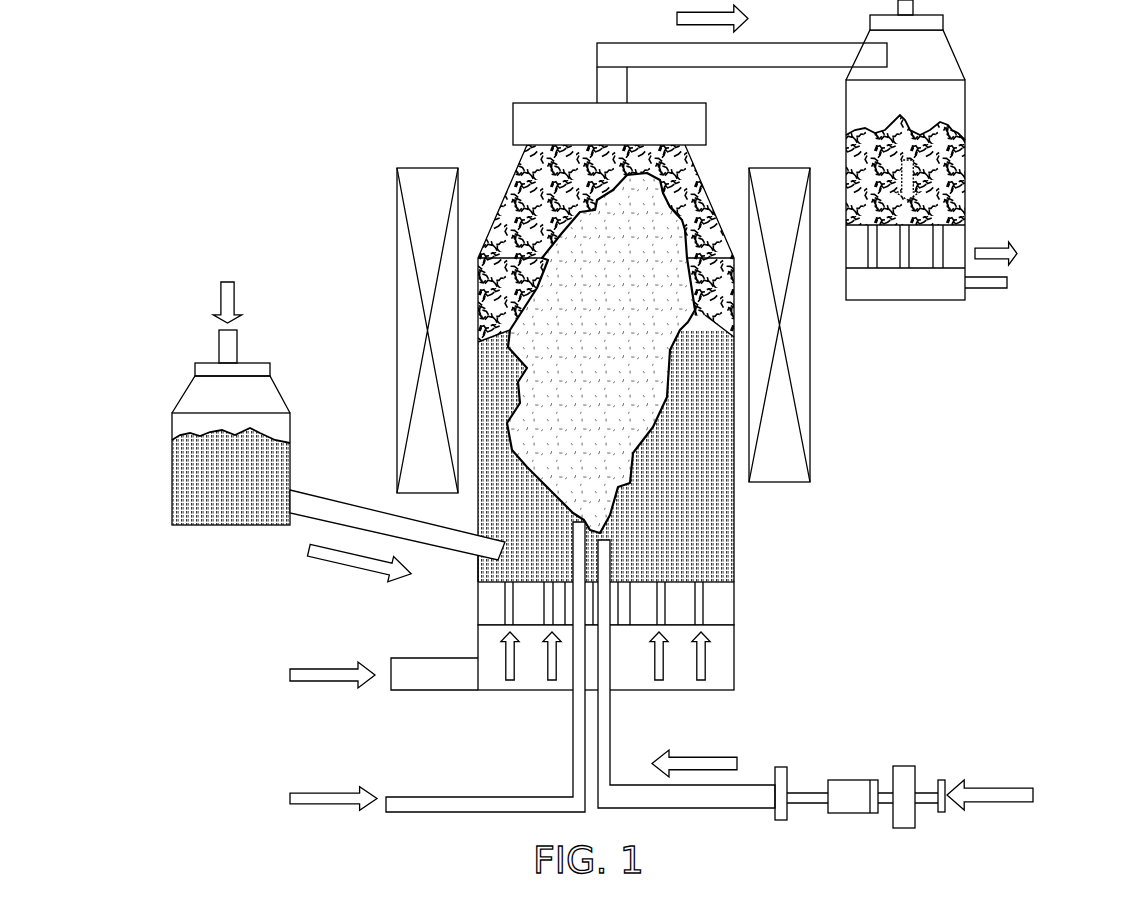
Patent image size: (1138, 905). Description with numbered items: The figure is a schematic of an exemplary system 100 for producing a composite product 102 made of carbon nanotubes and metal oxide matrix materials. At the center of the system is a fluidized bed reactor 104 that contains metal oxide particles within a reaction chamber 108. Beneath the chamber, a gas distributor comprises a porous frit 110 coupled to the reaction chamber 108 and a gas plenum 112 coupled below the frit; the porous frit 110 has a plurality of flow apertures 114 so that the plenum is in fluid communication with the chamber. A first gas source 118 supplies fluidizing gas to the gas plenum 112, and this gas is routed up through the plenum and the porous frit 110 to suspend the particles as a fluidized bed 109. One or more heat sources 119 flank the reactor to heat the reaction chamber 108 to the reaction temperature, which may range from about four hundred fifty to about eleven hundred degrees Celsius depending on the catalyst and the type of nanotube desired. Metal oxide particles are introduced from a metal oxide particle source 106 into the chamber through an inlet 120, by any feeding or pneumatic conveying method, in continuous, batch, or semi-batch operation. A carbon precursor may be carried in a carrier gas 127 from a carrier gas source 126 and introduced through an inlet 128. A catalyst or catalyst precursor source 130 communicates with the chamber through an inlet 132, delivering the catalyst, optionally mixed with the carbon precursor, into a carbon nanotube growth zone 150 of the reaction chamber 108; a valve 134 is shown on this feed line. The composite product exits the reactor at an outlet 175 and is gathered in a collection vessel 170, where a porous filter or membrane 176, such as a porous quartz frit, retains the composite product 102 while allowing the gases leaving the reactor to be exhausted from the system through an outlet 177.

The system 100 is at (352, 95).
The composite product 102 is at (948, 160).
The fluidized bed reactor 104 is at (488, 150).
The metal oxide particle source 106 is at (215, 468).
The reaction chamber 108 is at (700, 190).
The fluidized bed 109 is at (497, 368).
The porous frit 110 is at (477, 605).
The gas plenum 112 is at (522, 690).
The flow apertures 114 is at (707, 590).
The first gas source 118 is at (357, 674).
The heat source 119 is at (805, 411).
The inlet 120 is at (478, 562).
The carrier gas source 126 is at (414, 672).
The carrier gas 127 is at (231, 303).
The inlet 128 is at (567, 530).
The catalyst or catalyst precursor source 130 is at (873, 784).
The inlet 132 is at (613, 543).
The valve 134 is at (852, 788).
The carbon nanotube growth zone 150 is at (583, 310).
The collection vessel 170 is at (980, 62).
The outlet 175 is at (586, 92).
The porous filter or membrane 176 is at (943, 240).
The outlet 177 is at (998, 289).